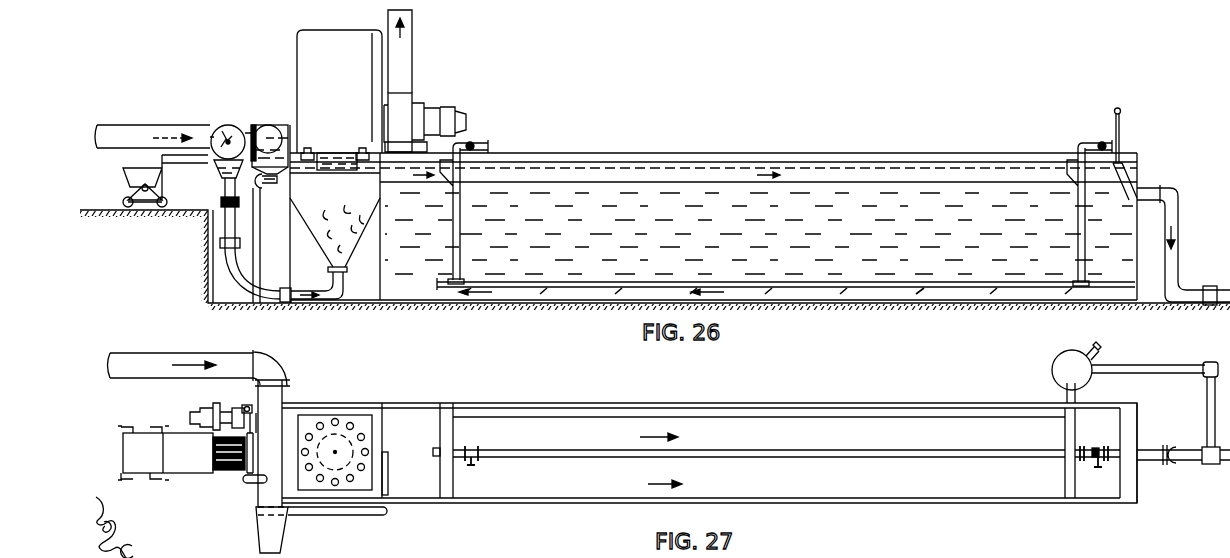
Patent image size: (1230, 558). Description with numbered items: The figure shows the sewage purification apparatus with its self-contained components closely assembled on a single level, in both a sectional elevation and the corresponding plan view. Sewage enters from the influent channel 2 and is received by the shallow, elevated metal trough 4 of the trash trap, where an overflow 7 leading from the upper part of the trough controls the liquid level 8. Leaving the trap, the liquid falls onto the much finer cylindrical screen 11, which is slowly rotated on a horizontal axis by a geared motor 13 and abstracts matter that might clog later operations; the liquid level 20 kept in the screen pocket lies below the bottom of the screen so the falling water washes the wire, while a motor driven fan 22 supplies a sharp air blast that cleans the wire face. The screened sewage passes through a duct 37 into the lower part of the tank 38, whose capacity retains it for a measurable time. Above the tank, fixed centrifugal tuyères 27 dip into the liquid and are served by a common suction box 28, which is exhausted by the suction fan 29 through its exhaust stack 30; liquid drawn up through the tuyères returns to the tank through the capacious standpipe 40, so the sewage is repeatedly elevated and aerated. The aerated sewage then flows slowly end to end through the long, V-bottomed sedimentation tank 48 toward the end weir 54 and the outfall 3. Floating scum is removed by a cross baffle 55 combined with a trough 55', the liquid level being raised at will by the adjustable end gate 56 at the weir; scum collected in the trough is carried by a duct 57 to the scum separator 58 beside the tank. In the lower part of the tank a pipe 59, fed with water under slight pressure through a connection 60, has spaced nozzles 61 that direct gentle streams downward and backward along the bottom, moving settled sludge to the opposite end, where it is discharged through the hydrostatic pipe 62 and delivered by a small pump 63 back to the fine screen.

In FIG. 26, the influent channel 2 is at (146, 130).
In FIG. 27, the influent channel 2 is at (182, 360).
In FIG. 26, the outfall 3 is at (1151, 189).
In FIG. 27, the outfall 3 is at (1146, 461).
In FIG. 26, the trough 4 is at (289, 127).
In FIG. 27, the trough 4 is at (286, 410).
In FIG. 27, the overflow 7 is at (246, 405).
In FIG. 26, the liquid level 8 is at (274, 127).
In FIG. 26, the fine screen 11 is at (225, 127).
In FIG. 27, the fine screen 11 is at (226, 473).
In FIG. 27, the geared motor 13 is at (232, 420).
In FIG. 26, the liquid level 20 is at (246, 181).
In FIG. 27, the motor driven fan 22 is at (192, 412).
In FIG. 26, the centrifugal tuyères 27 is at (307, 147).
In FIG. 27, the centrifugal tuyères 27 is at (337, 418).
In FIG. 26, the suction box 28 is at (304, 50).
In FIG. 27, the suction box 28 is at (356, 418).
In FIG. 26, the suction fan 29 is at (411, 103).
In FIG. 26, the exhaust stack 30 is at (406, 47).
In FIG. 26, the duct 37 is at (305, 291).
In FIG. 26, the tank 38 is at (320, 225).
In FIG. 26, the standpipe 40 is at (320, 153).
In FIG. 26, the sedimentation tank 48 is at (695, 153).
In FIG. 27, the sedimentation tank 48 is at (863, 500).
In FIG. 27, the end weir 54 is at (1131, 423).
In FIG. 26, the cross baffle 55 is at (768, 201).
In FIG. 27, the cross baffle 55 is at (776, 450).
In FIG. 27, the trough 55' is at (759, 401).
In FIG. 26, the adjustable end gate 56 is at (1122, 162).
In FIG. 27, the duct 57 is at (1066, 399).
In FIG. 27, the scum separator 58 is at (1052, 370).
In FIG. 26, the pipe 59 is at (972, 289).
In FIG. 26, the connection 60 is at (1101, 142).
In FIG. 27, the connection 60 is at (1096, 449).
In FIG. 26, the nozzles 61 is at (924, 292).
In FIG. 26, the hydrostatic pipe 62 is at (263, 186).
In FIG. 27, the hydrostatic pipe 62 is at (338, 517).
In FIG. 26, the small pump 63 is at (258, 190).
In FIG. 27, the small pump 63 is at (253, 484).